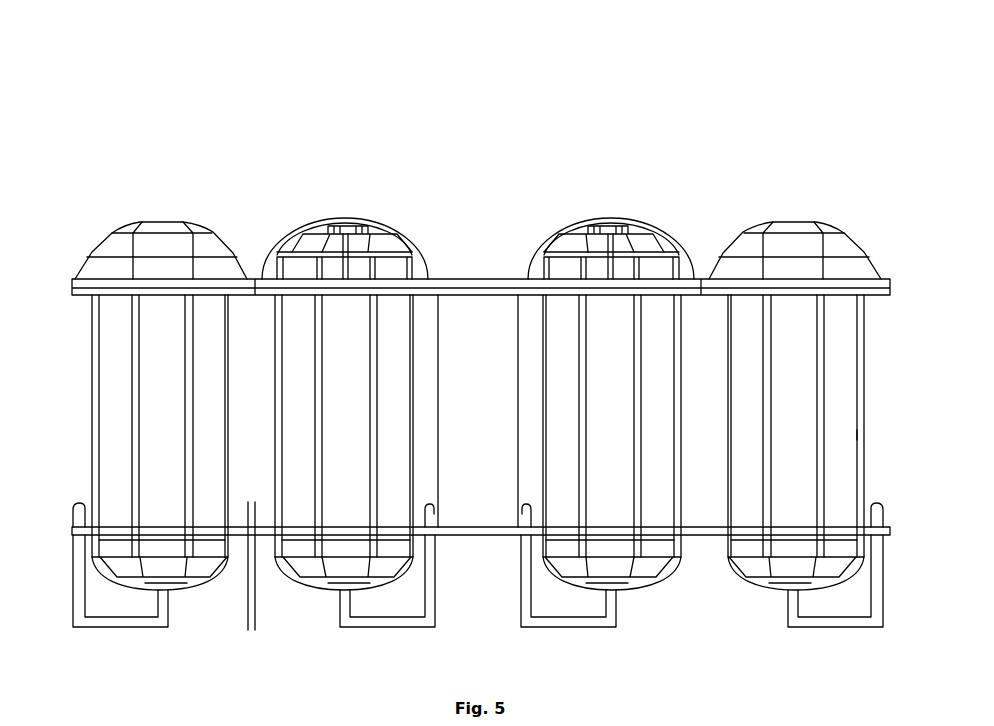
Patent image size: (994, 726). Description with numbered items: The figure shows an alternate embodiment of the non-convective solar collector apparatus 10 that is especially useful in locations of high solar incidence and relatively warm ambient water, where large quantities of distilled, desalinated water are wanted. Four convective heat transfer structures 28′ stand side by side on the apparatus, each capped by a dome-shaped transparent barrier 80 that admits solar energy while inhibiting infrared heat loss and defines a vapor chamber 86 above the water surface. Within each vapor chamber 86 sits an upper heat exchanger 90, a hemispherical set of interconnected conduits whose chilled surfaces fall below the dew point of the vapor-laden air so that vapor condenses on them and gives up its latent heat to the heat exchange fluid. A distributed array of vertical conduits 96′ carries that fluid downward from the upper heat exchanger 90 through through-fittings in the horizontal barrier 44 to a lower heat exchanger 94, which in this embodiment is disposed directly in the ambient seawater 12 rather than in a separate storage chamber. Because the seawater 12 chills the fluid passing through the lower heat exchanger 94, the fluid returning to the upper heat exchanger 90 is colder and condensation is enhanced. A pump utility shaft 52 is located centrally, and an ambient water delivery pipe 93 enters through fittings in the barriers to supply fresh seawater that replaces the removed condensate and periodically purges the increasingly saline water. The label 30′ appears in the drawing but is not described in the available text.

The apparatus 10 is at (252, 81).
The ambient seawater 12 is at (478, 585).
The convective heat transfer structure 28′ is at (78, 228).
The tube module 30′ is at (883, 435).
The horizontal barrier 44 is at (482, 535).
The pump utility shaft 52 is at (480, 305).
The transparent barrier 80 is at (163, 243).
The vapor chamber 86 is at (382, 243).
The upper heat exchanger 90 is at (318, 245).
The ambient water delivery pipe 93 is at (262, 605).
The lower heat exchanger 94 is at (195, 607).
The vertical conduits 96′ is at (225, 423).